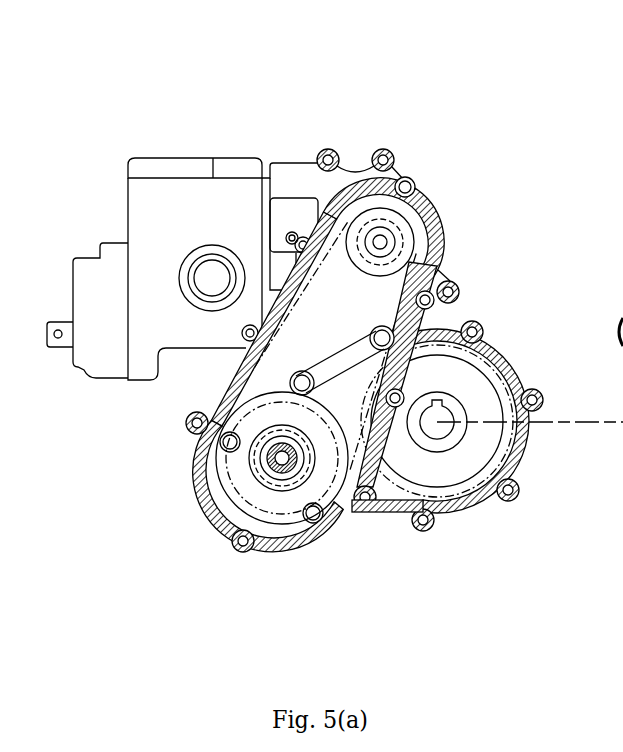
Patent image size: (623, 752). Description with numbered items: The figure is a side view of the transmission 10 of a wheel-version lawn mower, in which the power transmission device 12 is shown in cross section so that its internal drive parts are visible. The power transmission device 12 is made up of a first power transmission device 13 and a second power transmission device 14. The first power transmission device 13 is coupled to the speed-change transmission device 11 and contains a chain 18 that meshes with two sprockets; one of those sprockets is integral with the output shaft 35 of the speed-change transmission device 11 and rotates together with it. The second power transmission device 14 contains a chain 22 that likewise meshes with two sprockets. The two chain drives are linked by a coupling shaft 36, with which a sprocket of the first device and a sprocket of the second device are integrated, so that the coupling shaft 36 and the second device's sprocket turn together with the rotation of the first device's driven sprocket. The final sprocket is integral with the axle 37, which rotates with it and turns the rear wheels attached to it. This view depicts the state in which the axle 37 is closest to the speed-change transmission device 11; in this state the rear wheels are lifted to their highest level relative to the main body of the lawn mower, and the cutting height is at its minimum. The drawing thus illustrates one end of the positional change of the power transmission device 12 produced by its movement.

The transmission 10 is at (314, 108).
The speed-change transmission device 11 is at (160, 158).
The power transmission device 12 is at (541, 58).
The first power transmission device 13 is at (437, 210).
The second power transmission device 14 is at (455, 332).
The chain 18 is at (237, 373).
The chain 22 is at (390, 516).
The output shaft 35 is at (380, 242).
The coupling shaft 36 is at (282, 458).
The axle 37 is at (437, 430).